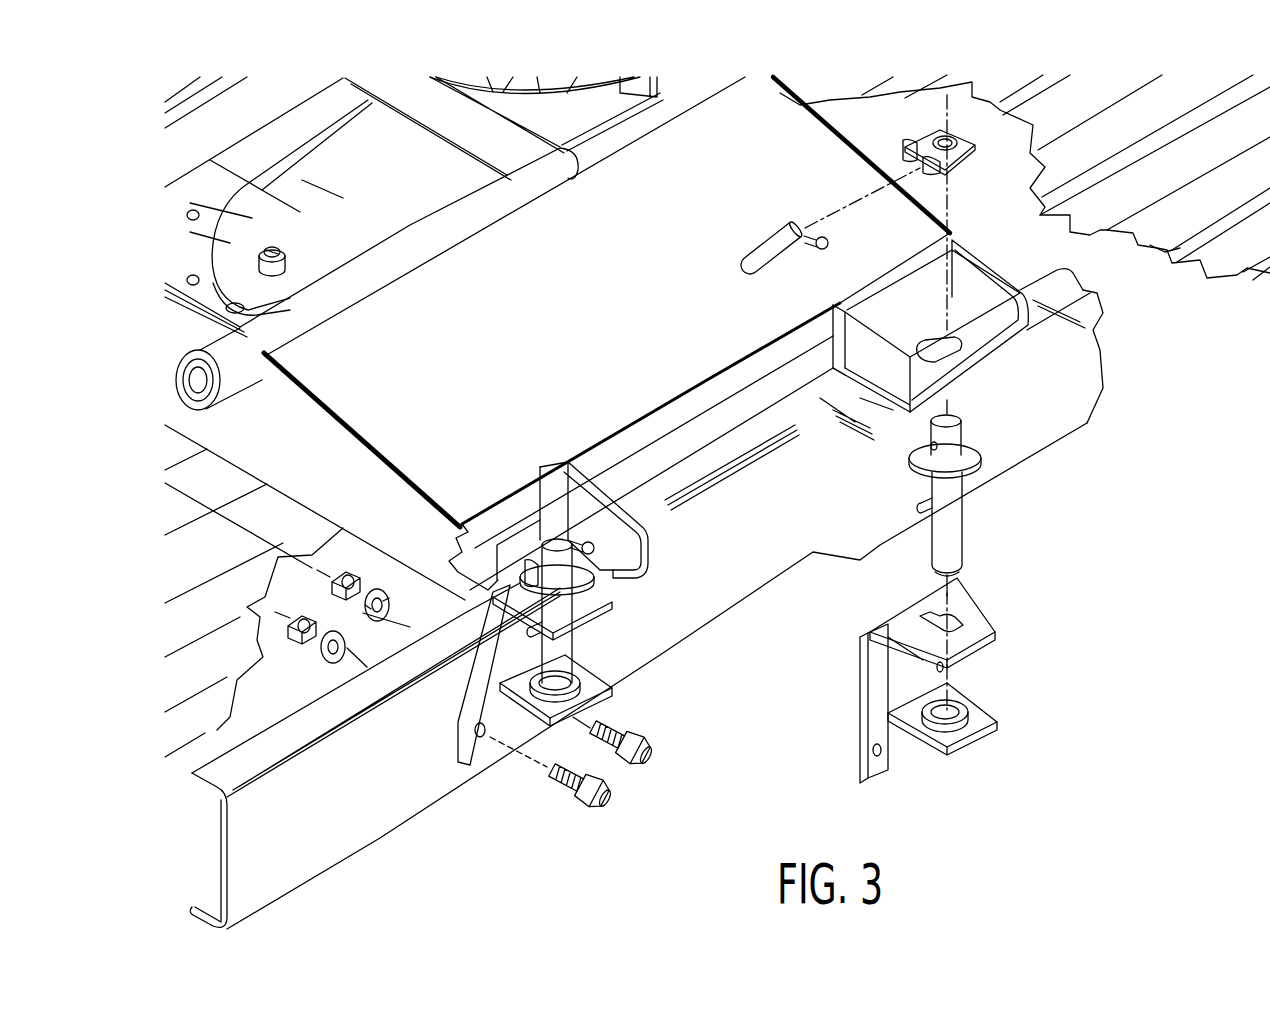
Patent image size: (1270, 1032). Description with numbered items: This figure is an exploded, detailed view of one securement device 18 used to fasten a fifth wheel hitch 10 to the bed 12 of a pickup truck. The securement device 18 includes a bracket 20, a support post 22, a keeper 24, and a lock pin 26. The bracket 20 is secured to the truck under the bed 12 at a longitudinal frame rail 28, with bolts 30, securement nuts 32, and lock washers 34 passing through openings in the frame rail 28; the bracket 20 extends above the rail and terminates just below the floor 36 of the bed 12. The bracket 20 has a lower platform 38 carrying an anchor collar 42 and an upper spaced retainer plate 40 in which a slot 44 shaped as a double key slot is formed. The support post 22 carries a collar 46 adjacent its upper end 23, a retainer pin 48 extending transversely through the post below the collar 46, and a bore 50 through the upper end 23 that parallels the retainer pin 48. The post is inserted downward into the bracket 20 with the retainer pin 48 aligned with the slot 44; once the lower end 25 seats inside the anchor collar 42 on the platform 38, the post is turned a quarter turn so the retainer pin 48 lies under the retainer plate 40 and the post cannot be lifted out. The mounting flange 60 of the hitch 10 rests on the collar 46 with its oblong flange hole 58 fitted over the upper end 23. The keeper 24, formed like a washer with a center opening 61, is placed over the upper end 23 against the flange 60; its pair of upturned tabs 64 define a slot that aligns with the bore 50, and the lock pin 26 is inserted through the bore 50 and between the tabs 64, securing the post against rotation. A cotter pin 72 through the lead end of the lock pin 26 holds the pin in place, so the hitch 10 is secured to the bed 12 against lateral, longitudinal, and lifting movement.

The fifth wheel hitch 10 is at (508, 345).
The bed 12 is at (1140, 203).
The securement device 18 is at (774, 621).
The bracket 20 is at (729, 637).
The support post 22 is at (964, 500).
The upper end 23 is at (962, 418).
The keeper 24 is at (948, 212).
The lower end 25 is at (932, 578).
The lock pin 26 is at (750, 248).
The frame rail 28 is at (735, 585).
The bolts 30 is at (645, 762).
The securement nuts 32 is at (330, 585).
The lock washers 34 is at (345, 645).
The floor 36 is at (1157, 240).
The lower platform 38 is at (975, 728).
The retainer plate 40 is at (985, 625).
The anchor collar 42 is at (965, 705).
The slot 44 is at (962, 620).
The collar 46 is at (975, 453).
The retainer pin 48 is at (918, 506).
The bore 50 is at (930, 448).
The flange hole 58 is at (960, 350).
The mounting flange 60 is at (975, 360).
The center opening 61 is at (960, 145).
The upturned tabs 64 is at (906, 150).
The cotter pin 72 is at (815, 260).